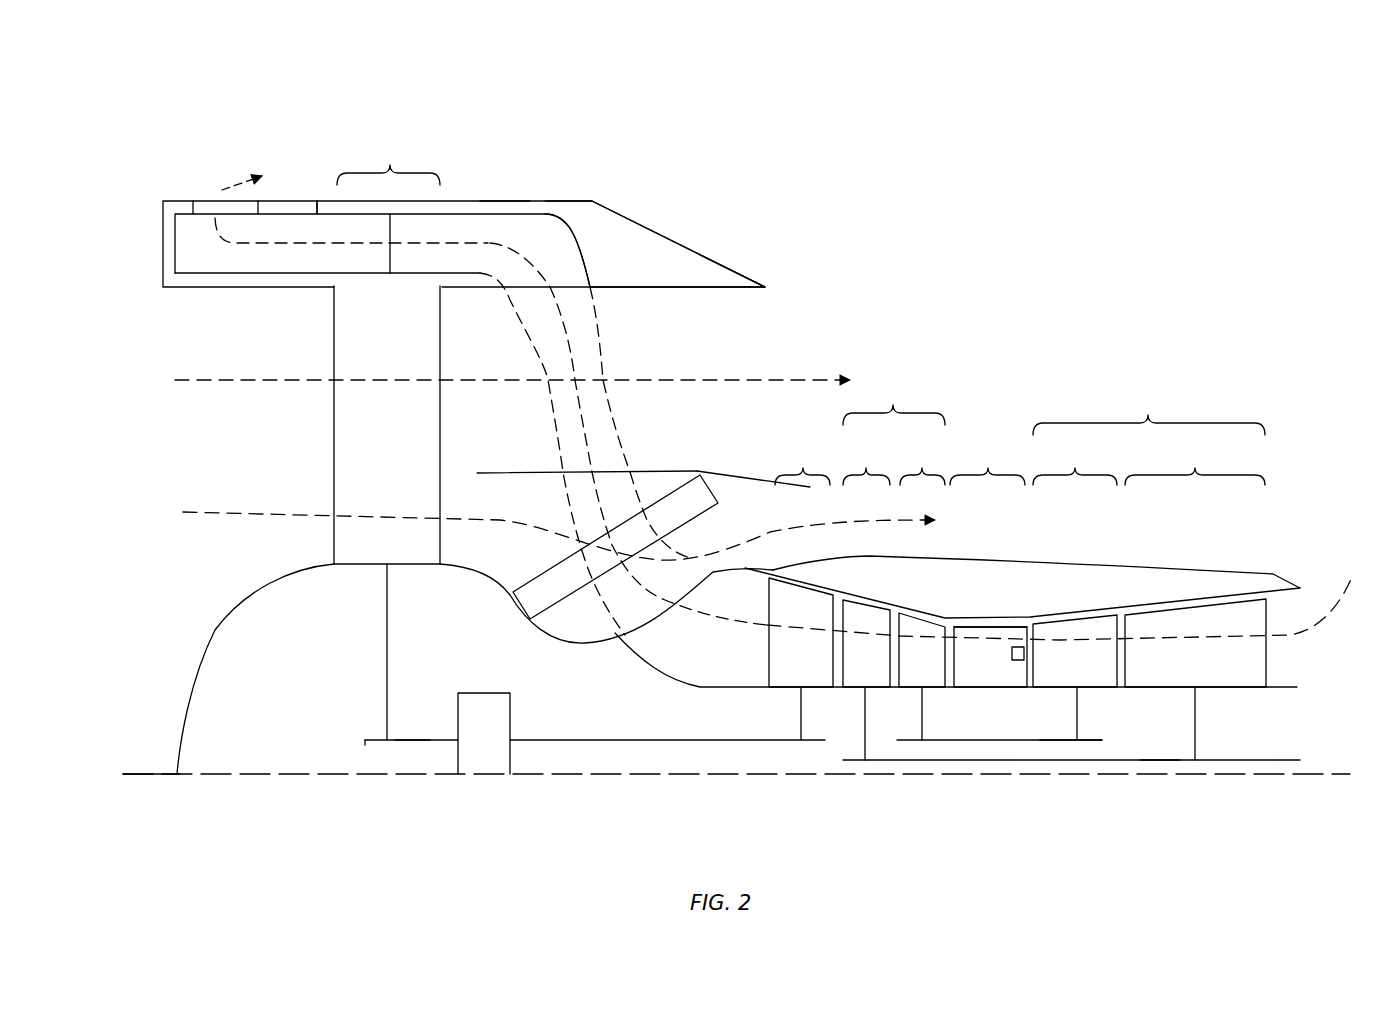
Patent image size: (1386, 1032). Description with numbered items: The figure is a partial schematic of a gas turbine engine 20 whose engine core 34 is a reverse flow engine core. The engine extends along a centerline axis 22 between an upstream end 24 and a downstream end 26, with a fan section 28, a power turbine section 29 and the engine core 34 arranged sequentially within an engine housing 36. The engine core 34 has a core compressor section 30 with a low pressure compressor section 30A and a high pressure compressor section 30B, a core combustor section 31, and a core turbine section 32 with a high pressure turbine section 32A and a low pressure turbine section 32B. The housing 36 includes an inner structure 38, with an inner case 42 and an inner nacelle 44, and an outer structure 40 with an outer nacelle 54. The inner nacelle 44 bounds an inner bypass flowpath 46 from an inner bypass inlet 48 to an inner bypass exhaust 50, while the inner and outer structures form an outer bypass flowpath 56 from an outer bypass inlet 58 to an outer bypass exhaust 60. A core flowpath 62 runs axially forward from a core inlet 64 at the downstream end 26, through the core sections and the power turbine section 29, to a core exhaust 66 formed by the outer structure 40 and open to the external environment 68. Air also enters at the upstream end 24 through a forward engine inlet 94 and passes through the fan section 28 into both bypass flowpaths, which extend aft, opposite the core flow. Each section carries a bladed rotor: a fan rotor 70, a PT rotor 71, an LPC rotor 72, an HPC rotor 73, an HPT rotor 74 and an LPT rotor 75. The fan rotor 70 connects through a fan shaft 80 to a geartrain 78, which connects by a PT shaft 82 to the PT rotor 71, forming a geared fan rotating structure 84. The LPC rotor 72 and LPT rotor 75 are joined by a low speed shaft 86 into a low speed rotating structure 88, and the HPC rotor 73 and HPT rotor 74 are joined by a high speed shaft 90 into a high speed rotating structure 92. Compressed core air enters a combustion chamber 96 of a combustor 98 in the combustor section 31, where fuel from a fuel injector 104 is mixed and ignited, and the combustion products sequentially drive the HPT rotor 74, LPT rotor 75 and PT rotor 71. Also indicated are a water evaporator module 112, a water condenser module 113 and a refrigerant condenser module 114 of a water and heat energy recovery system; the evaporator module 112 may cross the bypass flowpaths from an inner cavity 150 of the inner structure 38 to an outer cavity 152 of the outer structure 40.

The gas turbine engine 20 is at (176, 96).
The centerline axis 22 is at (128, 778).
The upstream end 24 is at (162, 238).
The downstream end 26 is at (1302, 588).
The fan section 28 is at (388, 160).
The power turbine section 29 is at (802, 462).
The core compressor section 30 is at (1149, 408).
The low pressure compressor section 30A is at (1195, 563).
The high pressure compressor section 30B is at (1075, 563).
The core combustor section 31 is at (962, 563).
The core turbine section 32 is at (894, 403).
The high pressure turbine section 32A is at (894, 563).
The low pressure turbine section 32B is at (829, 563).
The turbine engine core 34 is at (1003, 806).
The engine housing 36 is at (751, 226).
The housing inner structure 38 is at (726, 469).
The housing outer structure 40 is at (568, 198).
The inner case 42 is at (998, 616).
The inner nacelle 44 is at (655, 470).
The inner bypass flowpath 46 is at (762, 520).
The inner bypass inlet 48 is at (475, 493).
The inner bypass exhaust 50 is at (825, 505).
The outer nacelle 54 is at (507, 198).
The outer bypass flowpath 56 is at (654, 340).
The outer bypass inlet 58 is at (460, 432).
The outer bypass exhaust 60 is at (775, 333).
The core flowpath 62 is at (718, 575).
The core inlet 64 is at (1300, 650).
The core exhaust 66 is at (215, 218).
The external environment 68 is at (700, 97).
The fan rotor 70 is at (387, 650).
The PT rotor 71 is at (801, 712).
The LPC rotor 72 is at (1195, 722).
The HPC rotor 73 is at (1077, 712).
The HPT rotor 74 is at (923, 712).
The LPT rotor 75 is at (866, 715).
The geartrain 78 is at (498, 739).
The fan shaft 80 is at (412, 742).
The PT shaft 82 is at (580, 742).
The fan rotating structure 84 is at (366, 748).
The low speed shaft 86 is at (1158, 762).
The low speed rotating structure 88 is at (845, 764).
The high speed shaft 90 is at (1050, 742).
The high speed rotating structure 92 is at (920, 744).
The forward engine inlet 94 is at (165, 338).
The combustion chamber 96 is at (994, 672).
The combustor 98 is at (978, 624).
The fuel injector 104 is at (1018, 662).
The water evaporator module 112 is at (585, 248).
The water condenser module 113 is at (318, 210).
The refrigerant condenser module 114 is at (556, 612).
The inner cavity 150 is at (651, 715).
The outer cavity 152 is at (646, 270).